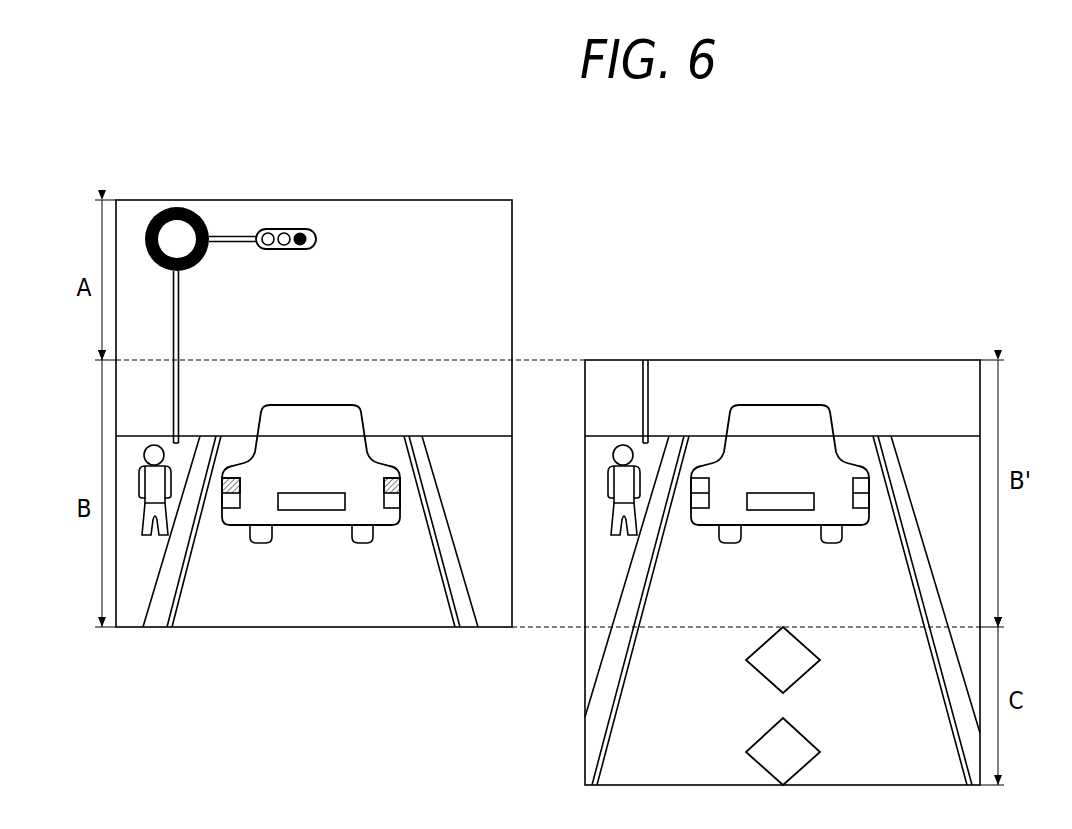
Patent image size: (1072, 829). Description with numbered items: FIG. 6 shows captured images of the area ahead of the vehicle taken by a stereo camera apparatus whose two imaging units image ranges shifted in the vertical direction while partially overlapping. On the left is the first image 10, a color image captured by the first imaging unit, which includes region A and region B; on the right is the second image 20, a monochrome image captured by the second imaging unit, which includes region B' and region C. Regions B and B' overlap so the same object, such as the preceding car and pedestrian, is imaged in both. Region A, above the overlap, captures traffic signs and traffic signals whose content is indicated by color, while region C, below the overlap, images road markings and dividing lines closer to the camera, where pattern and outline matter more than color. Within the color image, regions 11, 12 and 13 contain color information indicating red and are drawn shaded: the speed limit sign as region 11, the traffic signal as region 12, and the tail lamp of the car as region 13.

The first image 10 is at (314, 385).
The region containing color information 11 is at (177, 207).
The region containing color information 12 is at (296, 229).
The region containing color information 13 is at (400, 486).
The second image 20 is at (830, 360).